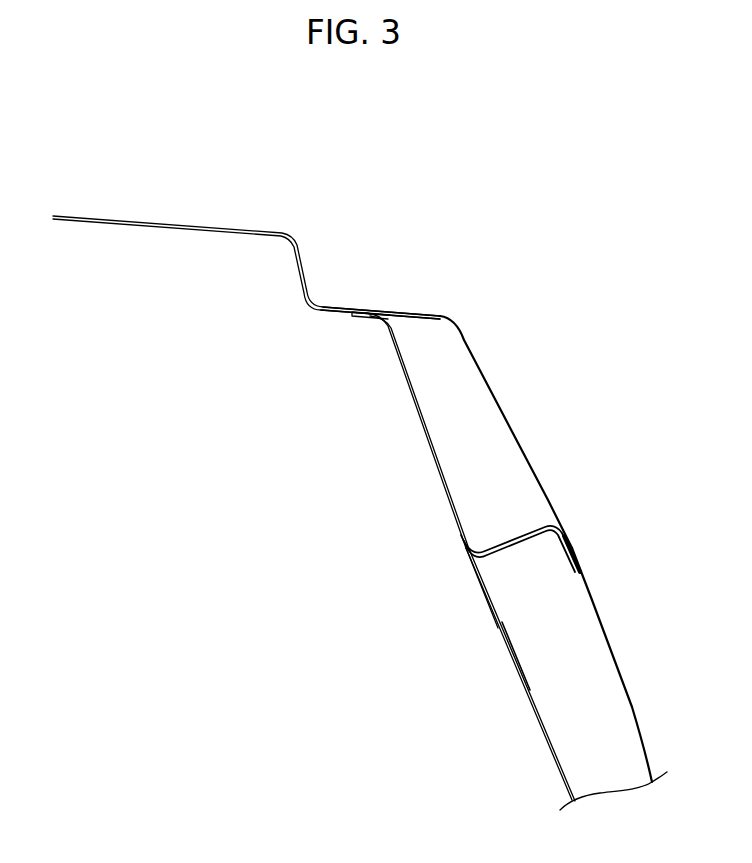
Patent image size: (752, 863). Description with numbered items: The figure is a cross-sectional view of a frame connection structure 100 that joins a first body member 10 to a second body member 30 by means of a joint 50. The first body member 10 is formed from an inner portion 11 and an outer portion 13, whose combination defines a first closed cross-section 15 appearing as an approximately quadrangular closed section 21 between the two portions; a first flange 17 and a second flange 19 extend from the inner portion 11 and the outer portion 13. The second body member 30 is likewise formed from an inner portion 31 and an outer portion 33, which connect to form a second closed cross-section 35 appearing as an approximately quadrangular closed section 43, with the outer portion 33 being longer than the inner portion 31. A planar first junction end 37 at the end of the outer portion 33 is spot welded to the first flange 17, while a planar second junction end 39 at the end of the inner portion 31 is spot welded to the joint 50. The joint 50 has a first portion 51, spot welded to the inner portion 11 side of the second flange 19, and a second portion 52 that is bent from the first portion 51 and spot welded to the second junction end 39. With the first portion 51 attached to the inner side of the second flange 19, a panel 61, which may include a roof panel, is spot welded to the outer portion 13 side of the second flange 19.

The frame connection structure 100 is at (379, 117).
The panel 61 is at (320, 247).
The second flange 19 is at (331, 328).
The first portion 51 is at (365, 319).
The first body member 10 is at (460, 420).
The first closed cross-section 15 is at (460, 420).
The inner portion 11 is at (422, 417).
The outer portion 13 is at (525, 458).
The closed section 21 is at (456, 361).
The second body member 30 is at (576, 683).
The second closed cross-section 35 is at (564, 683).
The inner portion 31 is at (544, 735).
The outer portion 33 is at (645, 758).
The closed section 43 is at (588, 676).
The joint 50 is at (510, 614).
The second portion 52 is at (462, 551).
The first flange 17 is at (598, 574).
The first junction end 37 is at (548, 560).
The second junction end 39 is at (524, 632).